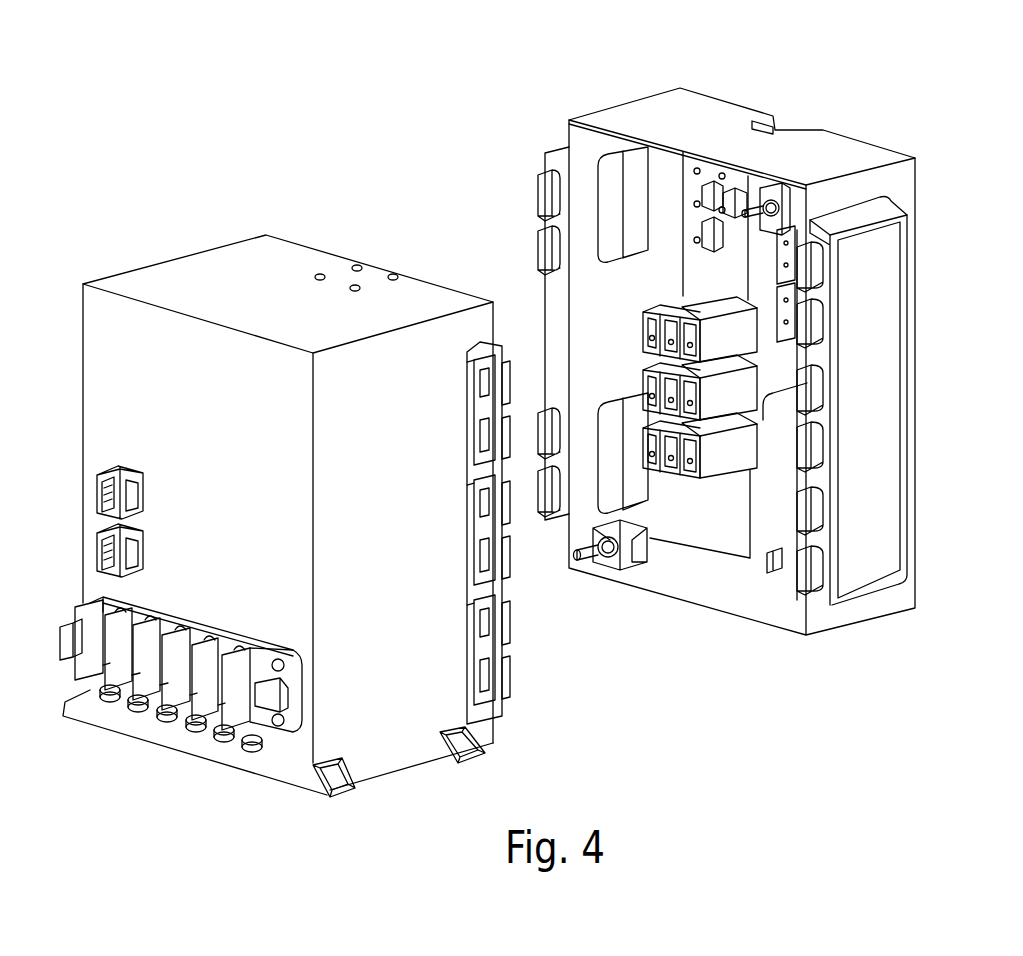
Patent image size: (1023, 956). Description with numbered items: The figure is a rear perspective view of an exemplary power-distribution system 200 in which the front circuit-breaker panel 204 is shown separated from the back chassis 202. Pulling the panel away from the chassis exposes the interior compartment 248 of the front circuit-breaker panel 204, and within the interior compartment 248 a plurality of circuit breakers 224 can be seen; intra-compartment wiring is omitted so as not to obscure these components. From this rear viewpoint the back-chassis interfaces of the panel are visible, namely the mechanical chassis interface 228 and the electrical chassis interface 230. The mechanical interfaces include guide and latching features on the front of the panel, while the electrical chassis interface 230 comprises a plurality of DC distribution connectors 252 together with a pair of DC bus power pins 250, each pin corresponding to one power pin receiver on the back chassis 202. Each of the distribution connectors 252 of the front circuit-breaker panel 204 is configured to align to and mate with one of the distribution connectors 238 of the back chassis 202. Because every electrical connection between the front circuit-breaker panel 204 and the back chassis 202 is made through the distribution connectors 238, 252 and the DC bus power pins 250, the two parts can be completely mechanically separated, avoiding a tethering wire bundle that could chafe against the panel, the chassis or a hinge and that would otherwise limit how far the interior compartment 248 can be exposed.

The power-distribution system 200 is at (318, 106).
The back chassis 202 is at (190, 268).
The front circuit-breaker panel 204 is at (628, 120).
The circuit breakers 224 is at (722, 470).
The mechanical chassis interface 228 is at (768, 572).
The electrical chassis interface 230 is at (826, 164).
The distribution connectors 238 is at (507, 625).
The interior compartment 248 is at (612, 180).
The DC bus power pins 250 is at (773, 188).
The distribution connectors 252 is at (540, 182).